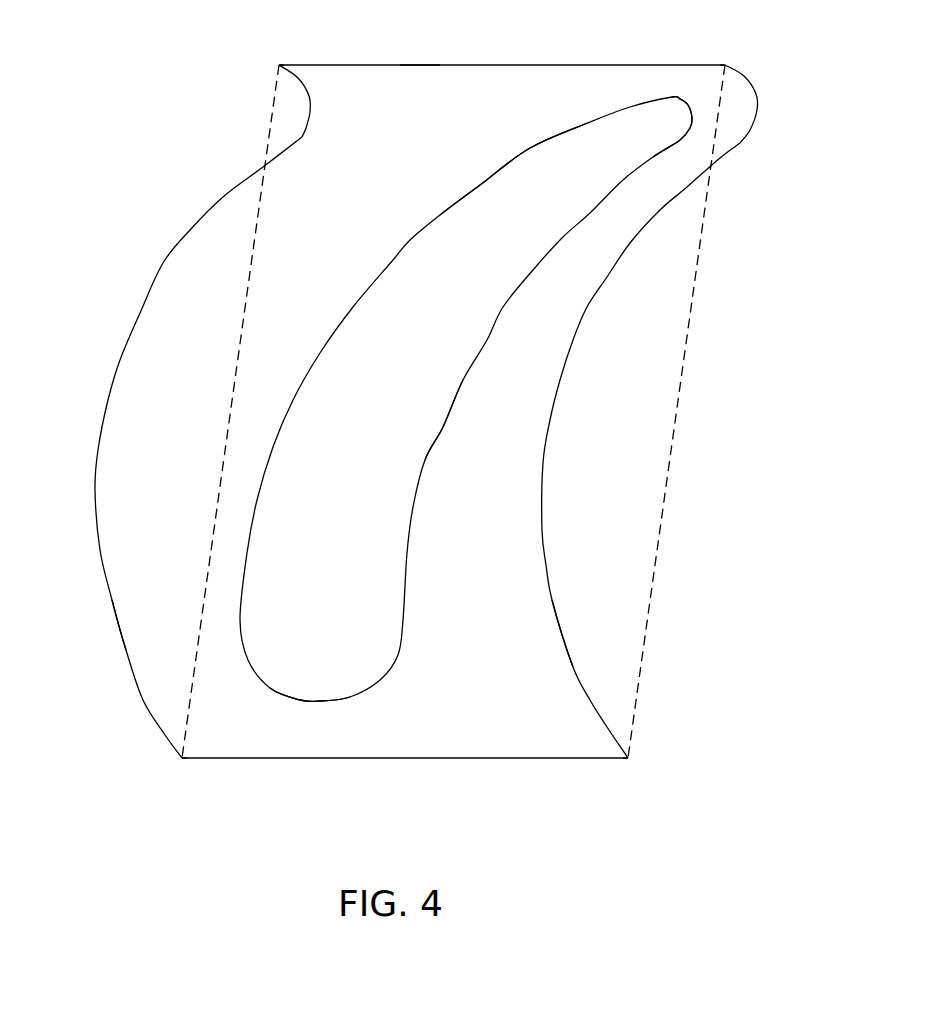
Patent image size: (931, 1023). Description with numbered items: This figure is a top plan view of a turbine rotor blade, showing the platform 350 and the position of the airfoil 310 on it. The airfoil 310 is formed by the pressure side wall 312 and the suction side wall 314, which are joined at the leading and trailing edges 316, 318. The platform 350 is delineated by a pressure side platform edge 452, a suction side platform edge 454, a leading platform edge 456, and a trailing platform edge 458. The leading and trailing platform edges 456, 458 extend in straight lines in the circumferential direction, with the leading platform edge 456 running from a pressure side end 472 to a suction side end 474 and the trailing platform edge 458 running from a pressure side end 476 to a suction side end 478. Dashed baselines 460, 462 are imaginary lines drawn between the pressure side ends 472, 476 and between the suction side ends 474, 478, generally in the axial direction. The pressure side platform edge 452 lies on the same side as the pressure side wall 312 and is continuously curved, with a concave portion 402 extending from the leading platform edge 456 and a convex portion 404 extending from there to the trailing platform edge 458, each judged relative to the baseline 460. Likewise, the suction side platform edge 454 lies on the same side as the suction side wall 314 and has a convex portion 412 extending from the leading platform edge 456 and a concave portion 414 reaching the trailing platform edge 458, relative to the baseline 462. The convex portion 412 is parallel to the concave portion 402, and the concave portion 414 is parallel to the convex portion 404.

The airfoil 310 is at (470, 184).
The pressure side wall 312 is at (443, 427).
The suction side wall 314 is at (412, 246).
The leading edge 316 is at (317, 700).
The trailing edge 318 is at (668, 97).
The platform 350 is at (423, 82).
The concave portion 402 is at (546, 463).
The convex portion 404 is at (748, 136).
The convex portion 412 is at (95, 482).
The concave portion 414 is at (304, 138).
The pressure side platform edge 452 is at (567, 617).
The suction side platform edge 454 is at (111, 679).
The leading platform edge 456 is at (417, 760).
The trailing platform edge 458 is at (510, 64).
The baseline 460 is at (677, 433).
The baseline 462 is at (253, 258).
The pressure side end 472 is at (628, 760).
The suction side end 474 is at (182, 760).
The pressure side end 476 is at (725, 64).
The suction side end 478 is at (279, 64).